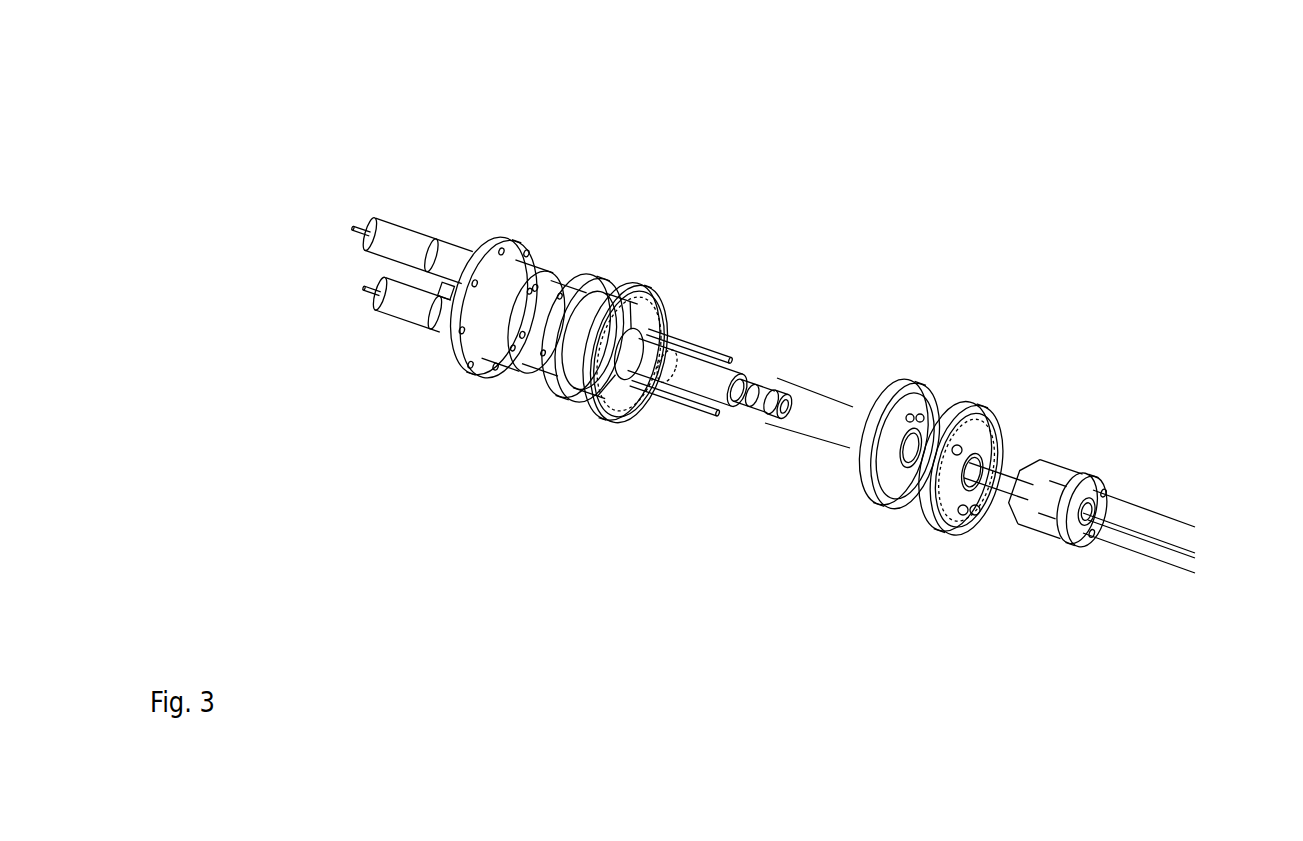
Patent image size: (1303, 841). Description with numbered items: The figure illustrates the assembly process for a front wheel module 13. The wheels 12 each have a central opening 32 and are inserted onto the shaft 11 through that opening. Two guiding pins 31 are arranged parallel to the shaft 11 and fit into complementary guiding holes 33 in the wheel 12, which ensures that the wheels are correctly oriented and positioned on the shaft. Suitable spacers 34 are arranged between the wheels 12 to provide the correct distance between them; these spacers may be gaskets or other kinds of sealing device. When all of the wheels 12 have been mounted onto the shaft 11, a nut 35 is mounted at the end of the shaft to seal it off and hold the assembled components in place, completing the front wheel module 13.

The shaft 11 is at (738, 370).
The wheels 12 is at (920, 527).
The front wheel module 13 is at (360, 173).
The guiding pins 31 is at (703, 407).
The central opening 32 is at (980, 460).
The guiding holes 33 is at (975, 522).
The spacers 34 is at (676, 350).
The nut 35 is at (1067, 465).